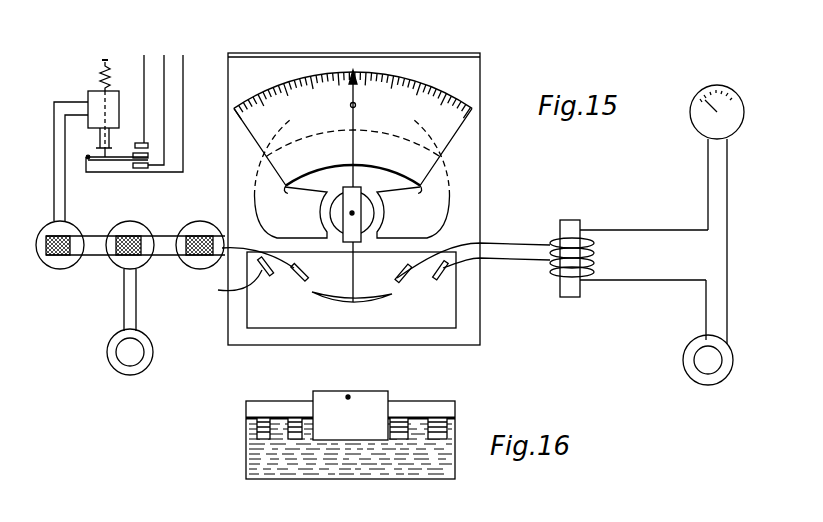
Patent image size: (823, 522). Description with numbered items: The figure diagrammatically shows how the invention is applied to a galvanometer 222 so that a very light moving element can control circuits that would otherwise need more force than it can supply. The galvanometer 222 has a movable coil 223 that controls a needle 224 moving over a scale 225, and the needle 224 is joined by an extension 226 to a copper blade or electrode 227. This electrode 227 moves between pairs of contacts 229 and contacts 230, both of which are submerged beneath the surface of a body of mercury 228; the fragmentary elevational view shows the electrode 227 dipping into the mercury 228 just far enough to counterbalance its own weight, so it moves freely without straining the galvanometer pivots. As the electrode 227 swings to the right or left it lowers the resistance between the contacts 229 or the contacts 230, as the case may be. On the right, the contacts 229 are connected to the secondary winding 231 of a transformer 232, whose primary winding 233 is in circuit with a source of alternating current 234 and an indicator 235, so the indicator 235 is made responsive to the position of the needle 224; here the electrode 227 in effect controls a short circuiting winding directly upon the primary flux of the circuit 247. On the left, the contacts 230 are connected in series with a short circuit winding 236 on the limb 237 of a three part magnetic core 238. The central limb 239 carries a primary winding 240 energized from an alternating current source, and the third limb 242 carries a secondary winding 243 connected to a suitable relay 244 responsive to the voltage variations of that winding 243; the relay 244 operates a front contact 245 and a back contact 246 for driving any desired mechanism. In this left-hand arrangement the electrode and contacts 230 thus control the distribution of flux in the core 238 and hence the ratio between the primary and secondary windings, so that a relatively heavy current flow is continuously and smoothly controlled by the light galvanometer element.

In FIG. 15, the galvanometer 222 is at (447, 72).
In FIG. 15, the movable coil 223 is at (362, 188).
In FIG. 15, the needle 224 is at (362, 100).
In FIG. 15, the scale 225 is at (457, 104).
In FIG. 15, the extension 226 is at (353, 263).
In FIG. 15, the copper blade or electrode 227 is at (377, 355).
In FIG. 16, the copper blade or electrode 227 is at (355, 412).
In FIG. 15, the body of mercury 228 is at (434, 304).
In FIG. 15, the contacts 229 is at (420, 268).
In FIG. 16, the contacts 229 is at (437, 417).
In FIG. 15, the contacts 230 is at (232, 291).
In FIG. 16, the contacts 230 is at (295, 418).
In FIG. 15, the secondary winding 231 is at (518, 244).
In FIG. 15, the transformer 232 is at (575, 224).
In FIG. 15, the primary winding 233 is at (612, 230).
In FIG. 15, the source of alternating current 234 is at (698, 352).
In FIG. 15, the indicator 235 is at (691, 112).
In FIG. 15, the short circuit winding 236 is at (190, 232).
In FIG. 15, the limb 237 is at (196, 262).
In FIG. 15, the three part magnetic core 238 is at (97, 258).
In FIG. 15, the central limb 239 is at (128, 240).
In FIG. 15, the primary winding 240 is at (123, 281).
In FIG. 15, the third limb 242 is at (50, 258).
In FIG. 15, the secondary winding 243 is at (44, 232).
In FIG. 15, the relay 244 is at (96, 102).
In FIG. 15, the front contact 245 is at (148, 146).
In FIG. 15, the back contact 246 is at (140, 168).
In FIG. 15, the circuit 247 is at (118, 358).